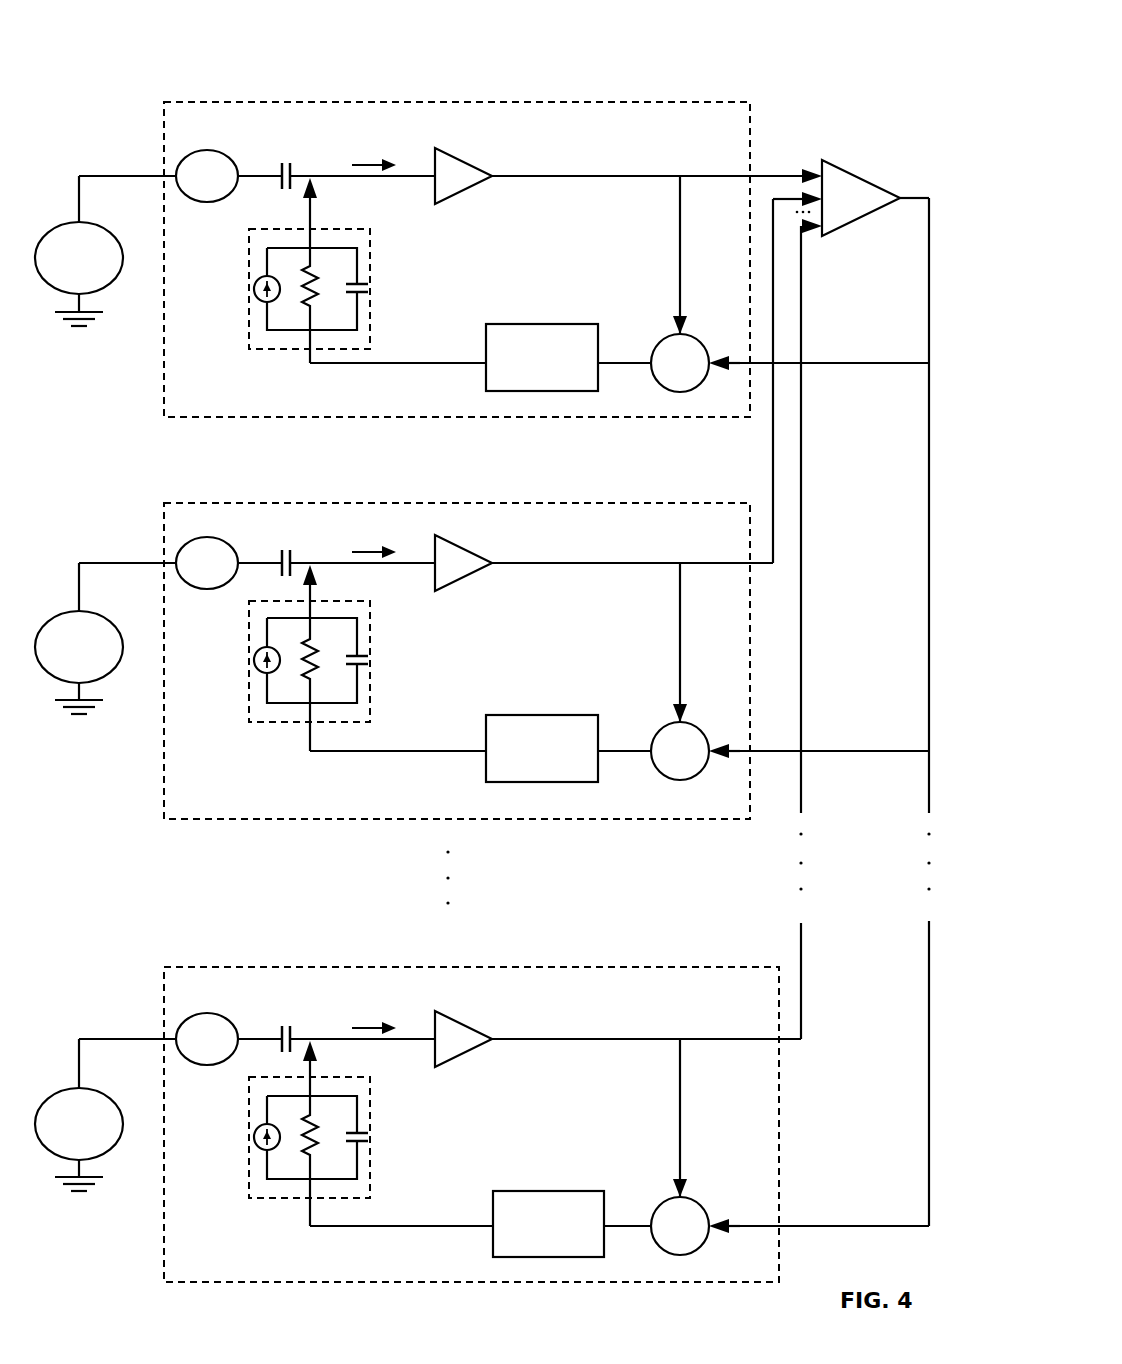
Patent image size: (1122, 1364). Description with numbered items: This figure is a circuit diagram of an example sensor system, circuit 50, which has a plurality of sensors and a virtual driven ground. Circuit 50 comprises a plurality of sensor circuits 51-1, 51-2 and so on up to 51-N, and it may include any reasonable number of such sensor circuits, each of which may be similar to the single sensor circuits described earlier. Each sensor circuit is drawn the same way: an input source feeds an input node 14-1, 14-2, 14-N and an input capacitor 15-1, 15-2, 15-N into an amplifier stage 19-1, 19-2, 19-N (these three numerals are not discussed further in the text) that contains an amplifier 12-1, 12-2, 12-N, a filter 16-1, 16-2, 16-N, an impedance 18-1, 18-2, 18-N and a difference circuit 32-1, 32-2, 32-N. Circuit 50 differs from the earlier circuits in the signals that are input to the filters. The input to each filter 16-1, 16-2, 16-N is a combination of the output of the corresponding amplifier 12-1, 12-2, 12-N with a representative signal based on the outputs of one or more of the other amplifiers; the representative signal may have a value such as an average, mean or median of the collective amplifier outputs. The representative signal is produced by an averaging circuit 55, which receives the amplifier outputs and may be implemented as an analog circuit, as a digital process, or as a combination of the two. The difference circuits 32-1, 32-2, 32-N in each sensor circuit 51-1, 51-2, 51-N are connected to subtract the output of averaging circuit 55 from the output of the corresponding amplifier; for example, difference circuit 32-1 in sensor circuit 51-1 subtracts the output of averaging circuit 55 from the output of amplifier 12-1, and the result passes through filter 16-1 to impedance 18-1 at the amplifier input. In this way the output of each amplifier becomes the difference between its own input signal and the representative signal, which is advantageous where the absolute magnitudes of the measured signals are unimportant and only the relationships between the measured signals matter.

The circuit 50 is at (768, 58).
The sensor circuit 51-1 is at (128, 95).
The sensor circuit 51-2 is at (140, 491).
The sensor circuit 51-N is at (143, 945).
The first amplifier circuit 19-1 is at (459, 102).
The second amplifier circuit 19-2 is at (432, 503).
The Nth amplifier circuit 19-N is at (421, 967).
The amplifier 12-1 is at (461, 150).
The amplifier 12-2 is at (461, 537).
The amplifier 12-N is at (461, 1013).
The first input terminal 14-1 is at (207, 176).
The second input terminal 14-2 is at (207, 563).
The Nth input terminal 14-N is at (207, 1039).
The first input capacitor 15-1 is at (276, 161).
The second input capacitor 15-2 is at (276, 552).
The Nth input capacitor 15-N is at (278, 1026).
The impedance 18-1 is at (265, 352).
The impedance 18-2 is at (265, 720).
The impedance 18-N is at (265, 1200).
The filter 16-1 is at (557, 391).
The filter 16-2 is at (540, 782).
The filter 16-N is at (548, 1257).
The difference circuit 32-1 is at (695, 353).
The difference circuit 32-2 is at (695, 741).
The difference circuit 32-N is at (695, 1216).
The averaging circuit 55 is at (872, 182).